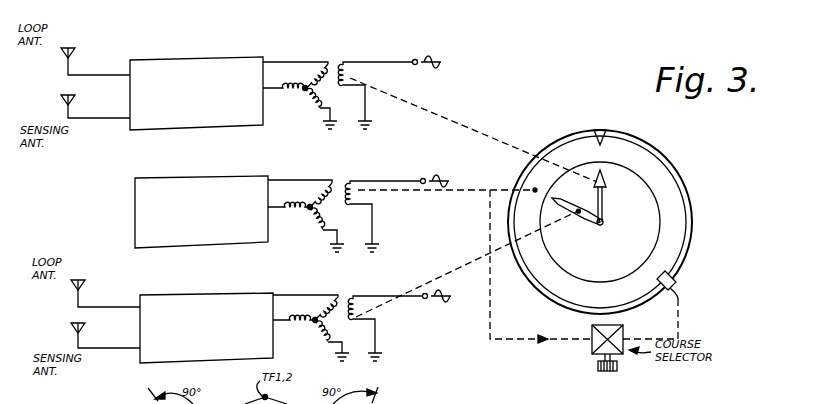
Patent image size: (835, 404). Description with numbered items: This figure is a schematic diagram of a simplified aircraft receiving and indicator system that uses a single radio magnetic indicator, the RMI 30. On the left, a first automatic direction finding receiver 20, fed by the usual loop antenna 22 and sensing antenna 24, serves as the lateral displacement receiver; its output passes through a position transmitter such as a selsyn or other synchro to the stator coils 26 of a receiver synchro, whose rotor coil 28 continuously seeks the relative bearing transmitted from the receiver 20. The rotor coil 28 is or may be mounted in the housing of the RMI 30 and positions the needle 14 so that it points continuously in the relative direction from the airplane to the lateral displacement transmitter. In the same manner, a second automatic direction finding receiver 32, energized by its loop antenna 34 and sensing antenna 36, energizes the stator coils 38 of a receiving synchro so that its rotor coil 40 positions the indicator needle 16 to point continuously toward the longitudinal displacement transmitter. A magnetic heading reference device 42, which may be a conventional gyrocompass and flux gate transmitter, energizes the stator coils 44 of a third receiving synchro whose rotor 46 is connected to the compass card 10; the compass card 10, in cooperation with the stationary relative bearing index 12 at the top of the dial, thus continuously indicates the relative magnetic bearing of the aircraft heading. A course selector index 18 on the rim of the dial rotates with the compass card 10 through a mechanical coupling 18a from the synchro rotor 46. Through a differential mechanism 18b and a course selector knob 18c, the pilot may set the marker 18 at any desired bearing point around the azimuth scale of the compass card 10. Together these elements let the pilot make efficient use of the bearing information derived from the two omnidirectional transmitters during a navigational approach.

The compass card 10 is at (562, 158).
The stationary relative bearing index 12 is at (603, 132).
The needle 14 is at (608, 190).
The indicator needle 16 is at (592, 228).
The course selector index 18 is at (672, 288).
The mechanical coupling 18a is at (516, 342).
The differential mechanism 18b is at (591, 331).
The course selector knob 18c is at (612, 371).
The first automatic direction finding receiver 20 is at (208, 60).
The loop antenna 22 is at (71, 48).
The sensing antenna 24 is at (74, 98).
The stator coils 26 is at (309, 80).
The rotor coil 28 is at (344, 63).
The RMI 30 is at (748, 221).
The second automatic direction finding receiver 32 is at (201, 295).
The loop antenna 34 is at (84, 286).
The sensing antenna 36 is at (84, 328).
The stator coils 38 is at (313, 326).
The rotor coil 40 is at (353, 296).
The magnetic heading reference device 42 is at (200, 177).
The stator coils 44 is at (308, 215).
The rotor 46 is at (350, 181).